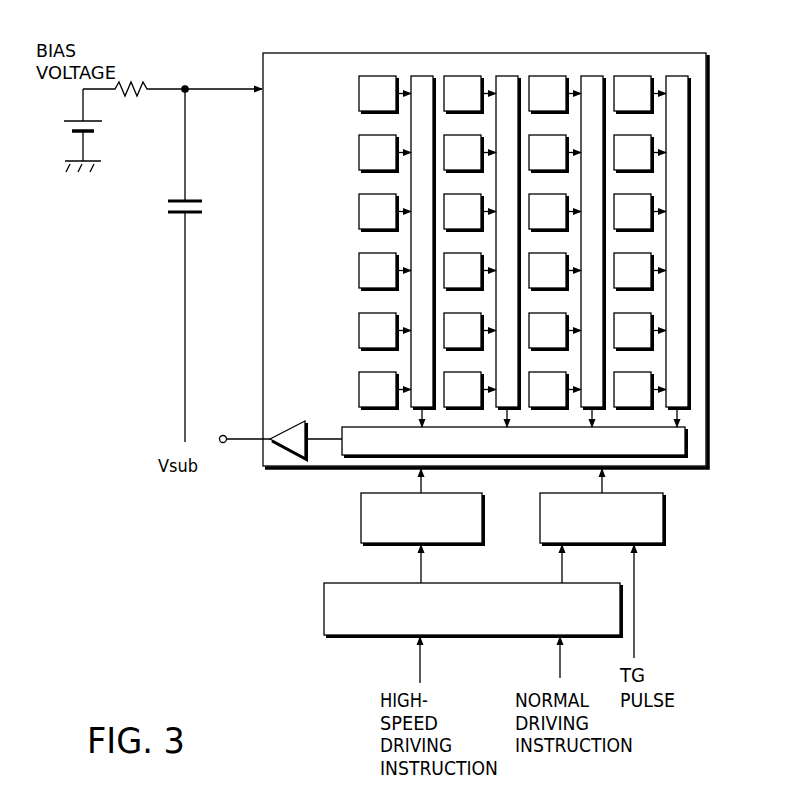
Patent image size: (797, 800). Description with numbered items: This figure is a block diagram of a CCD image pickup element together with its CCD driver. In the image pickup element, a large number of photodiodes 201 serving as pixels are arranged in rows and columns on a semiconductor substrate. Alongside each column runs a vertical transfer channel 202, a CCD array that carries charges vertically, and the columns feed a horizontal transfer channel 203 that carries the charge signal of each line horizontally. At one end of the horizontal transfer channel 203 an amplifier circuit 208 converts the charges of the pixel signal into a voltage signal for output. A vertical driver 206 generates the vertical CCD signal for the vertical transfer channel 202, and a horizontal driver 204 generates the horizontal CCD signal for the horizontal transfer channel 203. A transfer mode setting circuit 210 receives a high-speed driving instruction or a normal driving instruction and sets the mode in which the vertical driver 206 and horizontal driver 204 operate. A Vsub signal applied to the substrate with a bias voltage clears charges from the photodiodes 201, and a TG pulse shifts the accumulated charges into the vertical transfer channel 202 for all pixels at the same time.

The photodiodes 201 is at (359, 151).
The vertical transfer channels 202 is at (423, 76).
The horizontal transfer channels 203 is at (686, 441).
The horizontal driver 204 is at (664, 517).
The vertical driver 206 is at (361, 513).
The amplifier circuit 208 is at (295, 430).
The transfer mode setting circuit 210 is at (324, 611).